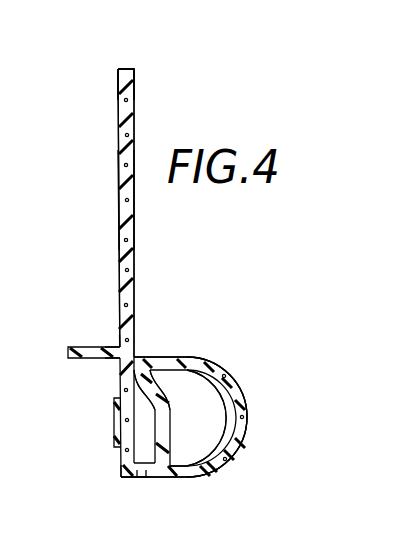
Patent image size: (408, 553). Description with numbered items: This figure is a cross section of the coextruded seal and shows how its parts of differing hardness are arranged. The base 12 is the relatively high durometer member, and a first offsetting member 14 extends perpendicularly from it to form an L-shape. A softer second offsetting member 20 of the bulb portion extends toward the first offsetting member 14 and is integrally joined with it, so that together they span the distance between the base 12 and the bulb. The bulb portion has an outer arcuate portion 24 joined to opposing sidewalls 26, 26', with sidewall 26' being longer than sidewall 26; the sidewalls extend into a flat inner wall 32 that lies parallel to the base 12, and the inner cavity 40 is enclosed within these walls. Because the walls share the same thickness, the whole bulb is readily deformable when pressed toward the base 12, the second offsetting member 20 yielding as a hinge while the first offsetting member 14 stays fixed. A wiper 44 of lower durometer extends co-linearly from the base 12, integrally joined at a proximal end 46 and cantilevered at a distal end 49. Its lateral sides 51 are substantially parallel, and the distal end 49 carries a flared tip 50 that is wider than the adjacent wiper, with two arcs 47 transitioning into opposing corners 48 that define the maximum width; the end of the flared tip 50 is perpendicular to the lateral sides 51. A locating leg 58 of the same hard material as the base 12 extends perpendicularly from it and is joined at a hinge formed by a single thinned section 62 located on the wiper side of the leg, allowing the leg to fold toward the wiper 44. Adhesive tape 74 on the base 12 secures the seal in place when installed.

The base 12 is at (120, 378).
The first offsetting member 14 is at (140, 479).
The second offsetting member 20 is at (162, 480).
The outer arcuate portion 24 is at (245, 409).
The sidewall 26 is at (184, 472).
The sidewall 26' is at (198, 363).
The inner wall 32 is at (158, 438).
The inner cavity 40 is at (243, 432).
The wiper 44 is at (112, 173).
The proximal end 46 is at (137, 357).
The arcs 47 is at (117, 72).
The corners 48 is at (118, 69).
The distal end 49 is at (130, 68).
The flared tip 50 is at (164, 67).
The lateral sides 51 is at (120, 183).
The locating leg 58 is at (92, 348).
The thinned section 62 is at (118, 347).
The adhesive tape 74 is at (113, 420).